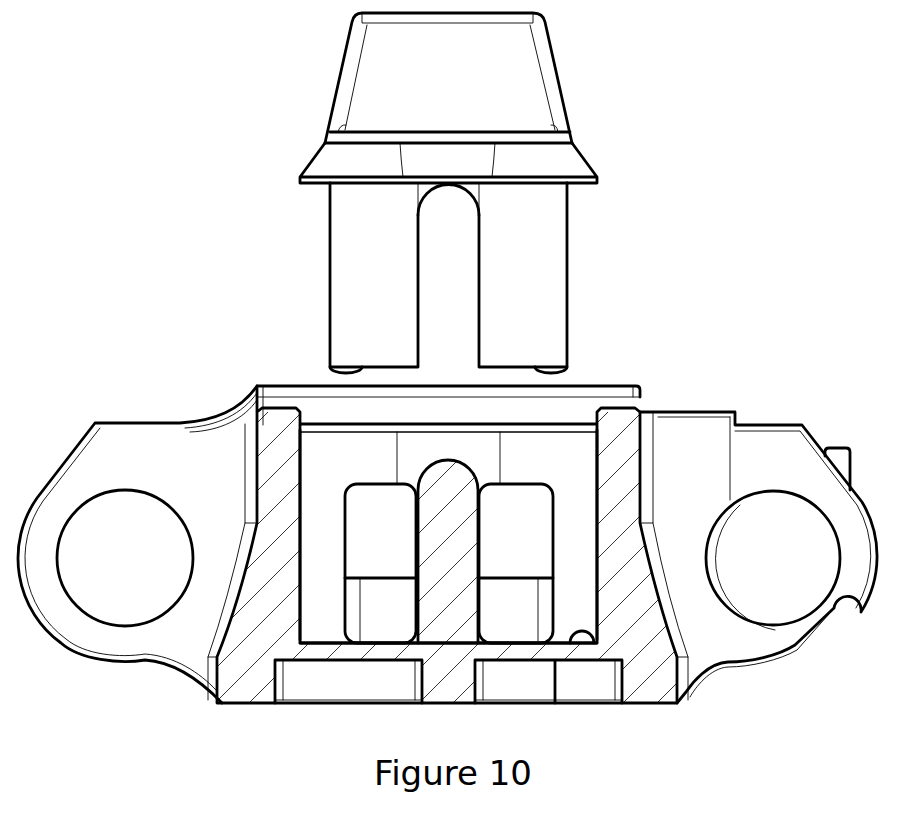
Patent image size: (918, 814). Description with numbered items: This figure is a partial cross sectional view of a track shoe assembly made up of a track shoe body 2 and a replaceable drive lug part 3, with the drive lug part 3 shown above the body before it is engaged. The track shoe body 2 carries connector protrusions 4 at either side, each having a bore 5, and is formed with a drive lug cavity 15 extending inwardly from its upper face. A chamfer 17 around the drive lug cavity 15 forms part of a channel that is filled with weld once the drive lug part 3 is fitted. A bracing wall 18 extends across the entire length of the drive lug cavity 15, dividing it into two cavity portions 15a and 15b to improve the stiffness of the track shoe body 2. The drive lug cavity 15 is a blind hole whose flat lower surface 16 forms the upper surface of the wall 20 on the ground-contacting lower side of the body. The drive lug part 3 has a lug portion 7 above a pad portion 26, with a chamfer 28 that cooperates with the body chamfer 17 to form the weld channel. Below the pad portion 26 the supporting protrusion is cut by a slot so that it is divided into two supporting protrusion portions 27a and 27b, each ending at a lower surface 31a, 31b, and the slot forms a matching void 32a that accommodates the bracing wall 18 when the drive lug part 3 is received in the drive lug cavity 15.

The track shoe body 2 is at (790, 370).
The replaceable drive lug part 3 is at (645, 92).
The connector protrusion 4 is at (75, 470).
The bore 5 is at (110, 600).
The lug portion 7 is at (380, 77).
The drive lug cavity 15 is at (372, 460).
The cavity portion 15a is at (317, 580).
The cavity portion 15b is at (582, 572).
The lower surface 16 is at (595, 637).
The chamfer 17 is at (625, 384).
The bracing wall 18 is at (438, 498).
The wall 20 is at (338, 655).
The pad portion 26 is at (298, 178).
The first leg 27a is at (348, 277).
The second leg 27b is at (545, 278).
The chamfer 28 is at (310, 153).
The first foot 31a is at (360, 370).
The second foot 31b is at (537, 370).
The void 32a is at (453, 228).